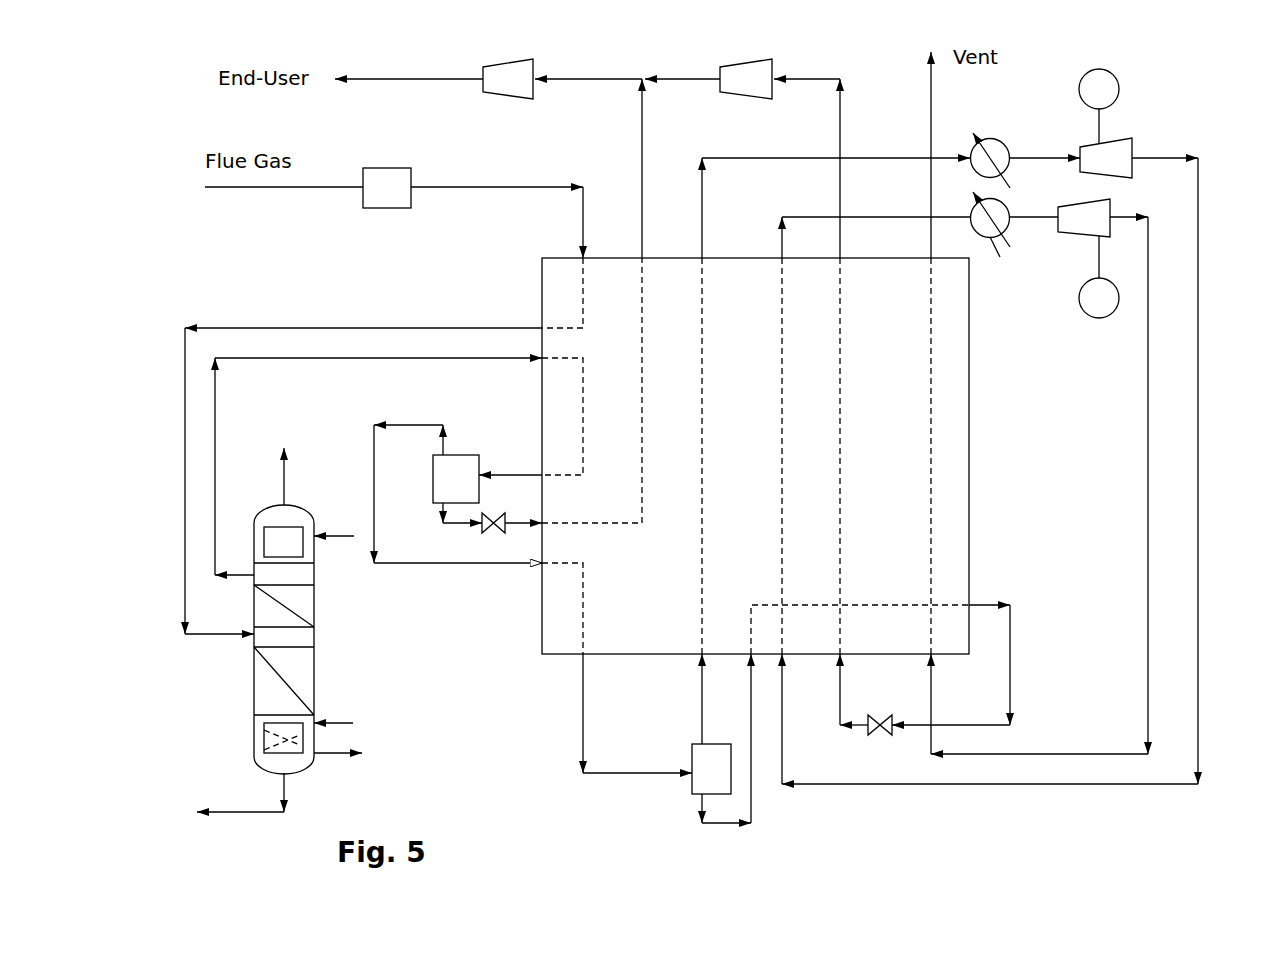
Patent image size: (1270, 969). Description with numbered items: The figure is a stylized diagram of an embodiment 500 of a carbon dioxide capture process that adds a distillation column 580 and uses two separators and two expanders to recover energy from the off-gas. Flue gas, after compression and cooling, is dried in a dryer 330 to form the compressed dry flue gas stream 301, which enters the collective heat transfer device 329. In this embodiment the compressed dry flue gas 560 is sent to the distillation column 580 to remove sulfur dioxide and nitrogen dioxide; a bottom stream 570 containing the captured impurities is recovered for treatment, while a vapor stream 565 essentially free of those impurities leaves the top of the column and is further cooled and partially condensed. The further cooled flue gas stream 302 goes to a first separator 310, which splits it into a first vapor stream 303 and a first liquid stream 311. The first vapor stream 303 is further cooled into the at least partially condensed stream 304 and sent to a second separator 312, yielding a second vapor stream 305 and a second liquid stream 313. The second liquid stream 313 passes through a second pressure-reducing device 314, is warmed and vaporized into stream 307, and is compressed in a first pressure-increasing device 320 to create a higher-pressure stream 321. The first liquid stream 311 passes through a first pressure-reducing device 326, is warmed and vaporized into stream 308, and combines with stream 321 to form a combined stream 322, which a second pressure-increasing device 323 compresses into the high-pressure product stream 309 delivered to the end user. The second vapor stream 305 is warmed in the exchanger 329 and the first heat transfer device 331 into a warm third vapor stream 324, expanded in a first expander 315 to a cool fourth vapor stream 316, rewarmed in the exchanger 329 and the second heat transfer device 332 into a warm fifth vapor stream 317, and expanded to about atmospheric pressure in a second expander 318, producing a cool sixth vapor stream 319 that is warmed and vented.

The CO2 capture and power system 500 is at (378, 267).
The compressed dry flue gas stream 301 is at (497, 242).
The further cooled flue gas stream 302 is at (510, 458).
The first vapor stream 303 is at (478, 539).
The at least partially condensed stream 304 is at (622, 713).
The second vapor stream 305 is at (820, 451).
The warmed and vaporized stream 307 is at (865, 402).
The warmed and vaporized first liquid stream 308 is at (666, 168).
The high-pressure stream 309 is at (409, 62).
The first separator 310 is at (456, 479).
The first liquid stream 311 is at (462, 526).
The second separator 312 is at (711, 769).
The second liquid stream 313 is at (727, 732).
The second pressure-reducing device 314 is at (881, 683).
The first expander 315 is at (1105, 123).
The cool fourth vapor stream 316 is at (1014, 471).
The warm fifth vapor stream 317 is at (1088, 258).
The second expander 318 is at (1129, 235).
The cool sixth vapor stream 319 is at (1058, 403).
The first pressure-increasing device 320 is at (780, 79).
The higher-pressure stream 321 is at (683, 63).
The combined stream 322 is at (588, 62).
The second pressure-increasing device 323 is at (508, 79).
The warm third vapor stream 324 is at (1045, 142).
The first pressure-reducing device 326 is at (562, 409).
The collective heat transfer device 329 is at (540, 588).
The dryer 330 is at (308, 188).
The first heat transfer device 331 is at (994, 151).
The second heat transfer device 332 is at (1015, 236).
The compressed dry flue gas 560 is at (363, 469).
The vapor stream 565 is at (399, 466).
The bottom stream 570 is at (240, 792).
The distillation column 580 is at (303, 665).